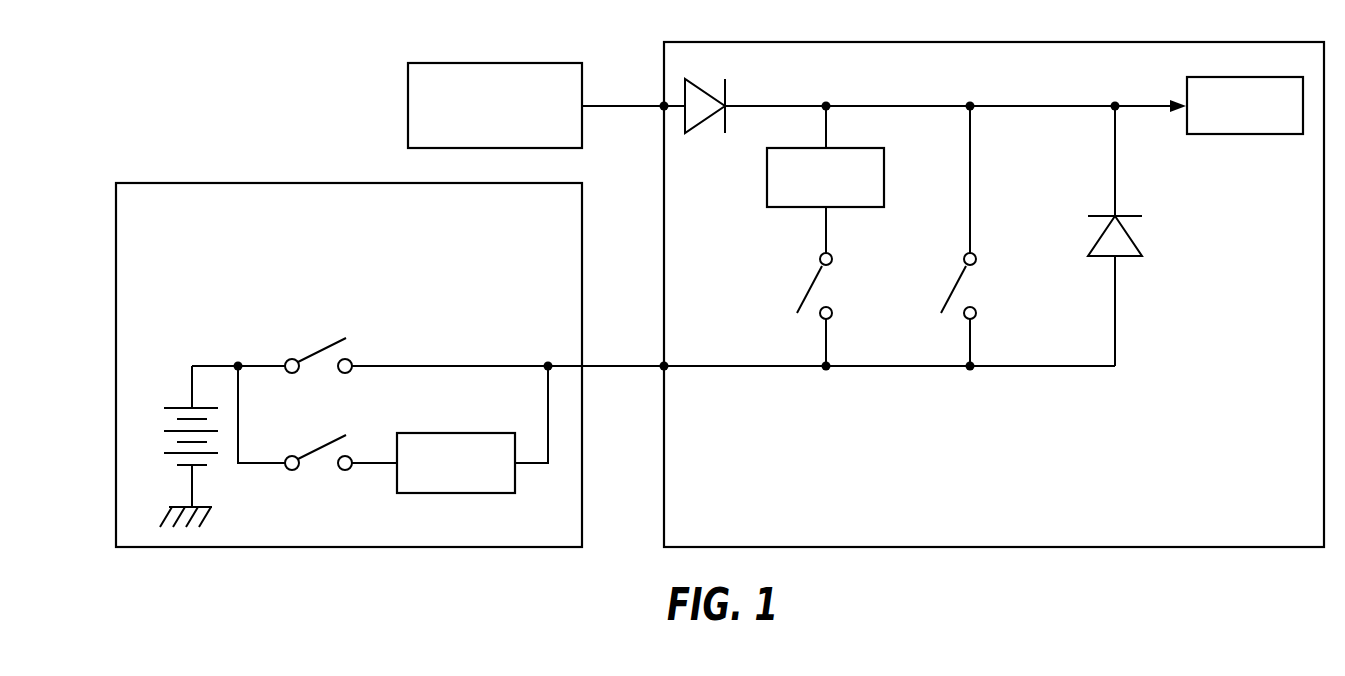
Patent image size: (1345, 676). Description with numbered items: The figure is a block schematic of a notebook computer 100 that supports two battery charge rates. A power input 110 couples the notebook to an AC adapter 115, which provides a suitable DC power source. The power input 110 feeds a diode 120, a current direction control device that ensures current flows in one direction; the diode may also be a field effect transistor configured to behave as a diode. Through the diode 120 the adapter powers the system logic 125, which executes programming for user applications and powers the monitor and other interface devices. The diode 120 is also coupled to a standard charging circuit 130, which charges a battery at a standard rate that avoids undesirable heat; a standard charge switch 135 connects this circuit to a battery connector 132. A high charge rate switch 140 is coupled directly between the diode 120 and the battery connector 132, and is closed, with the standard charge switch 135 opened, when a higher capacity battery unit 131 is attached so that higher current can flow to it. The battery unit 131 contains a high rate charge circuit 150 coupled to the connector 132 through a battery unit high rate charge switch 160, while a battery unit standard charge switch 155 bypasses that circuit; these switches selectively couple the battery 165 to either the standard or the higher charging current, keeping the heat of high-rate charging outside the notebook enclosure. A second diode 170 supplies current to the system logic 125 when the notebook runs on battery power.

The notebook computer 100 is at (995, 42).
The power input 110 is at (662, 104).
The AC adapter 115 is at (495, 63).
The diode 120 is at (705, 126).
The system logic 125 is at (1245, 77).
The standard charging circuit 130 is at (860, 148).
The battery unit 131 is at (348, 183).
The battery connector 132 is at (660, 364).
The standard charge switch 135 is at (810, 290).
The high charge rate switch 140 is at (954, 290).
The high rate charge circuit 150 is at (458, 433).
The battery unit standard charge switch 155 is at (322, 350).
The battery unit high rate charge switch 160 is at (322, 447).
The battery 165 is at (182, 405).
The second diode 170 is at (1132, 230).